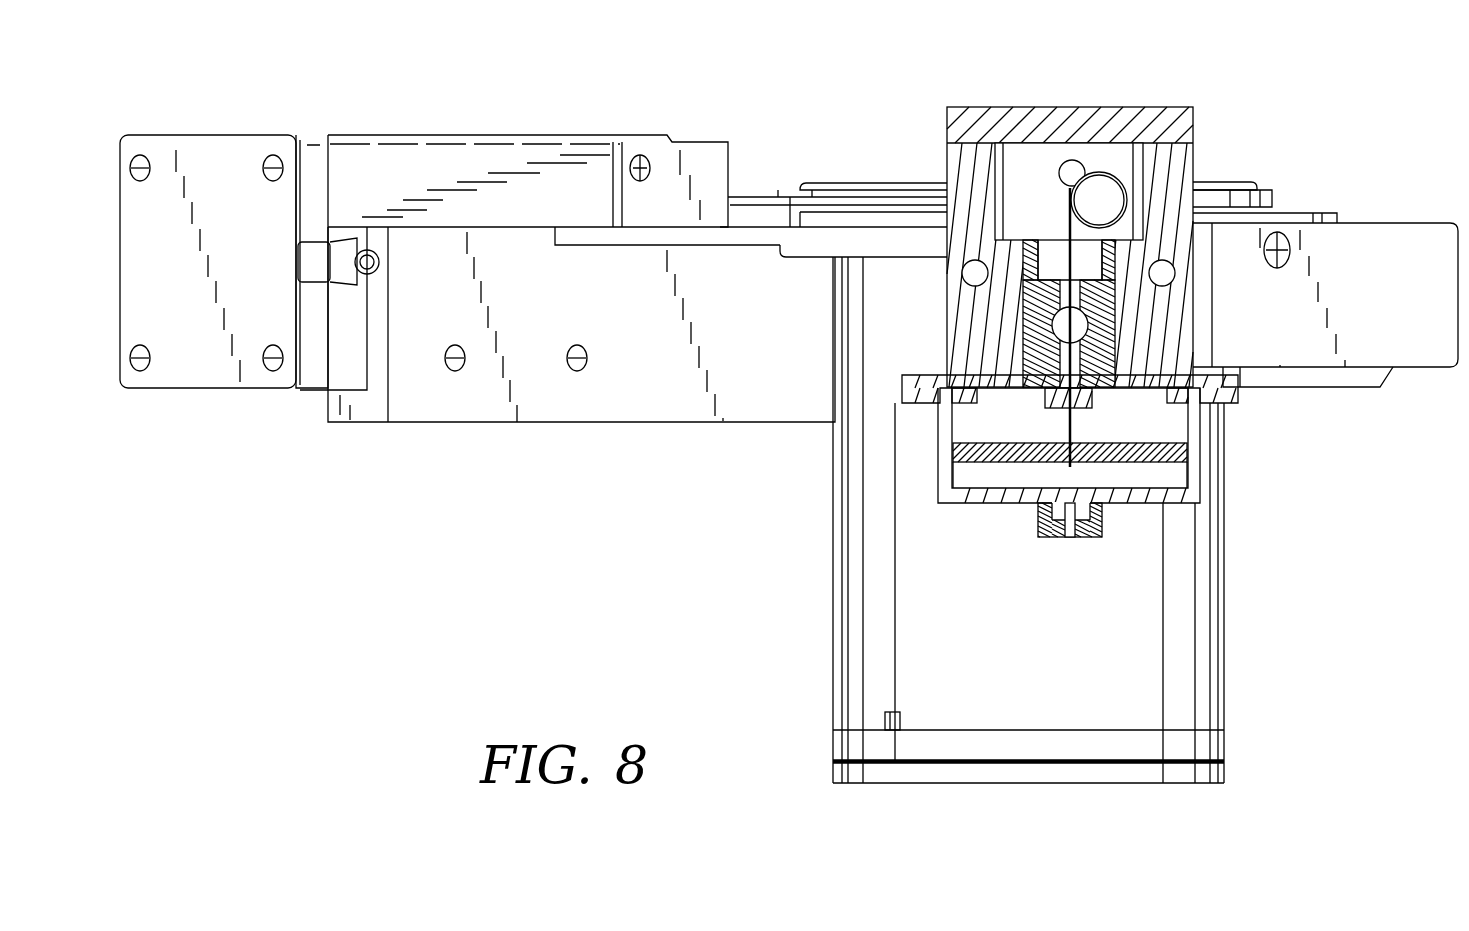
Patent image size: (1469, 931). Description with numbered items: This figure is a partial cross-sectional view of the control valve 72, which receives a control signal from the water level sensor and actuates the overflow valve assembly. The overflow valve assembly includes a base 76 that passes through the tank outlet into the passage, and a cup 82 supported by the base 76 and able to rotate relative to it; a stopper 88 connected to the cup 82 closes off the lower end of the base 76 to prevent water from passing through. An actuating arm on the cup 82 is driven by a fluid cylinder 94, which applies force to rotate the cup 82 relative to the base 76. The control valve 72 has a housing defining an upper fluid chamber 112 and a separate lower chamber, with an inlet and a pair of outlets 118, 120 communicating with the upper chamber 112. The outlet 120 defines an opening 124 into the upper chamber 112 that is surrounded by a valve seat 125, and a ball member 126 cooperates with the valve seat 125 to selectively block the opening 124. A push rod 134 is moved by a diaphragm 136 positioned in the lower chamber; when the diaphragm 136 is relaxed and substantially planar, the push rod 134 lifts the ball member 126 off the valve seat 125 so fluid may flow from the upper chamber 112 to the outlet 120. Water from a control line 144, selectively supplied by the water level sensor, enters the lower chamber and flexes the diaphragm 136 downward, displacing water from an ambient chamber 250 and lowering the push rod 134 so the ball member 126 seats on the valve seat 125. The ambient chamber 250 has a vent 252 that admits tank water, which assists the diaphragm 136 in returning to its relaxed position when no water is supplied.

The fluid cylinder 94 is at (418, 125).
The cup 82 is at (852, 187).
The control valve 72 is at (1207, 106).
The upper fluid chamber 112 is at (1033, 170).
The outlet 118 is at (1072, 160).
The ball member 126 is at (1100, 172).
The valve seat 125 is at (1050, 242).
The push rod 134 is at (1097, 267).
The opening 124 is at (1118, 268).
The outlet 120 is at (1095, 328).
The control line 144 is at (1030, 426).
The ambient chamber 250 is at (1170, 478).
The diaphragm 136 is at (953, 457).
The vent 252 is at (1063, 537).
The base 76 is at (1232, 547).
The stopper 88 is at (1223, 773).